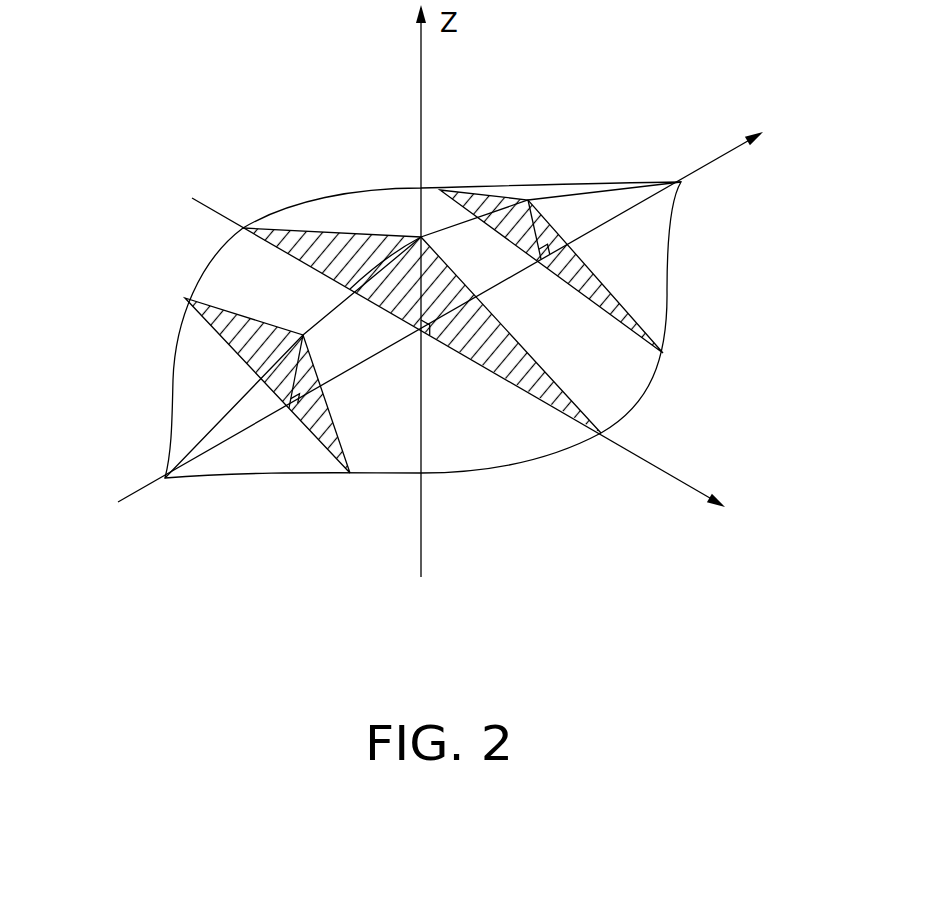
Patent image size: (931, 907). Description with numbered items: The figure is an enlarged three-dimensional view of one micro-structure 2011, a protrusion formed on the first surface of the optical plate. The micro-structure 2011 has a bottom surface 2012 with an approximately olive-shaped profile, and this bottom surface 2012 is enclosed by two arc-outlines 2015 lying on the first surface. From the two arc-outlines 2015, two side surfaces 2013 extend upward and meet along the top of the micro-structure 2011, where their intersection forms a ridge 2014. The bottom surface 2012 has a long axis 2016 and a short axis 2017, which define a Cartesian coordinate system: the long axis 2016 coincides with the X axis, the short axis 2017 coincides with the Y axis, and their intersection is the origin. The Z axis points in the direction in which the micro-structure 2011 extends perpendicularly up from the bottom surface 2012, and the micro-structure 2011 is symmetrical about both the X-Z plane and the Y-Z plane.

The micro-structure 2011 is at (175, 235).
The bottom surface 2012 is at (357, 218).
The side surfaces 2013 is at (243, 313).
The ridge 2014 is at (517, 200).
The arc-outlines 2015 is at (668, 328).
The long axis 2016 is at (707, 168).
The short axis 2017 is at (637, 459).